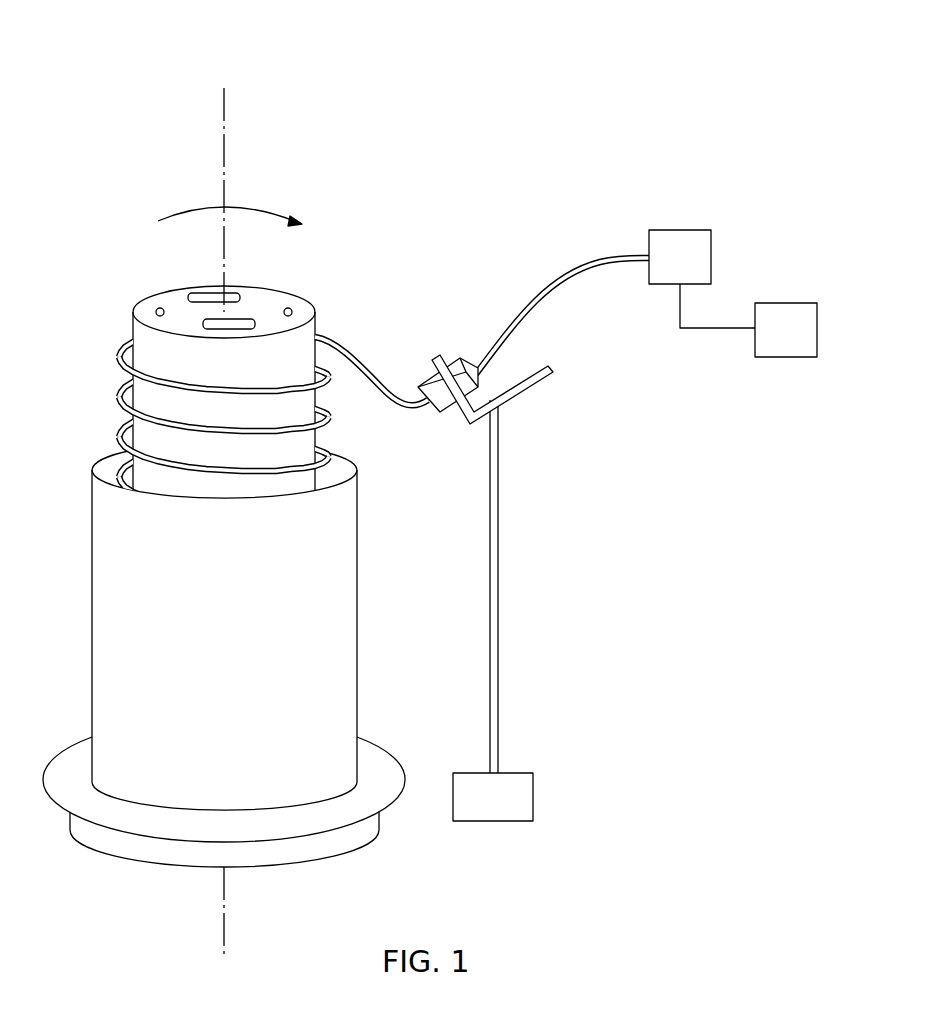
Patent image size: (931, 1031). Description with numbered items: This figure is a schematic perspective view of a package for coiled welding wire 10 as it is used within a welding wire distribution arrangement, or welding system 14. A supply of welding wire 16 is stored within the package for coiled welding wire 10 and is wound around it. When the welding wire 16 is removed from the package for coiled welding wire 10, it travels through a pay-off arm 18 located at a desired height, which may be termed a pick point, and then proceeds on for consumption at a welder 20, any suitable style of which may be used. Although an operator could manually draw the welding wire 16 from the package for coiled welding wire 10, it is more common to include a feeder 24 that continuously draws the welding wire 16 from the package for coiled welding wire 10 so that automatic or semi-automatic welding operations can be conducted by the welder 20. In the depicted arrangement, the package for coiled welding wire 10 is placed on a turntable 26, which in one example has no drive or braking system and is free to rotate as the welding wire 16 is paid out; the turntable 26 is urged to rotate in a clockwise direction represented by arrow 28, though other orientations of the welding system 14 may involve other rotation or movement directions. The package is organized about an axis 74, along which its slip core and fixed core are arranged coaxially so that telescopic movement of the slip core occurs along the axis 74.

The package for coiled welding wire 10 is at (115, 130).
The welding system 14 is at (585, 98).
The welding wire 16 is at (357, 354).
The pay-off arm 18 is at (433, 357).
The welder 20 is at (800, 303).
The feeder 24 is at (692, 230).
The turntable 26 is at (60, 751).
The arrow 28 is at (257, 204).
The axis 74 is at (226, 103).